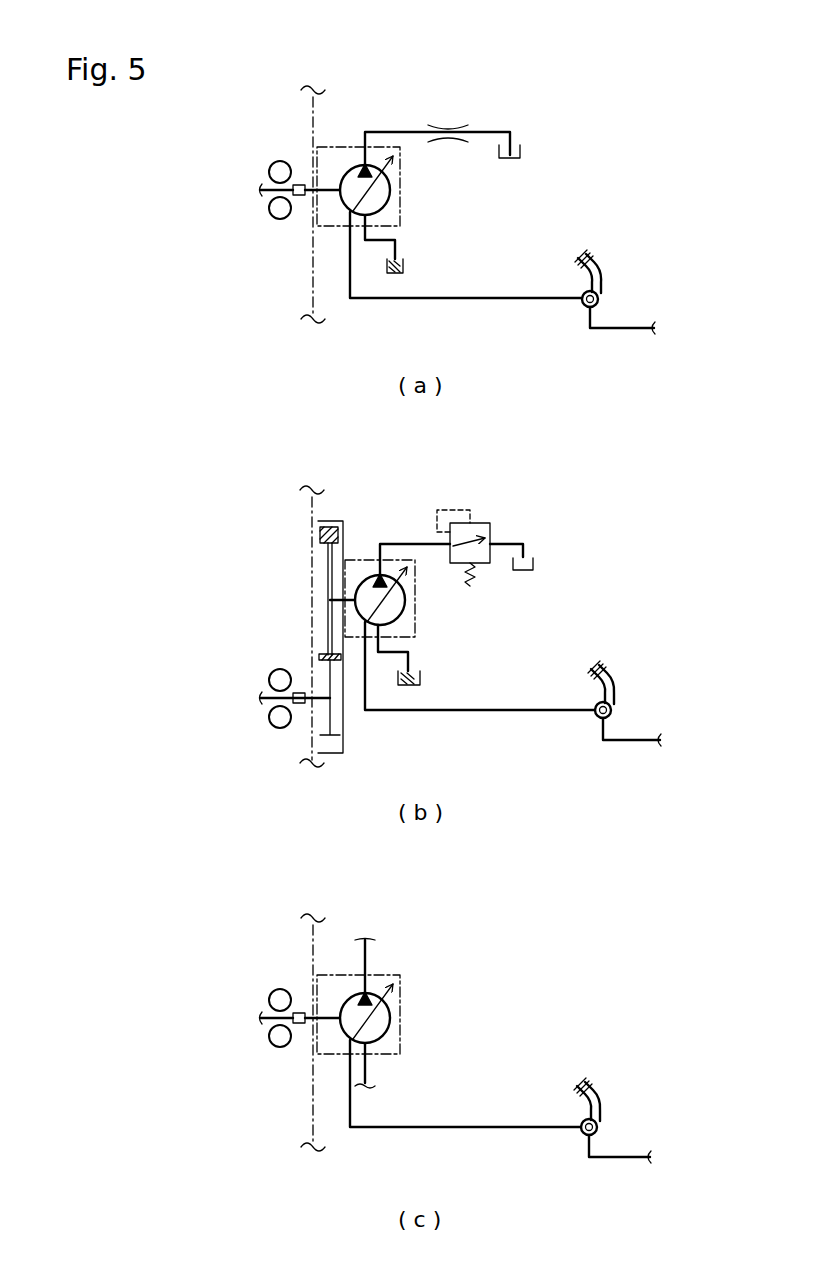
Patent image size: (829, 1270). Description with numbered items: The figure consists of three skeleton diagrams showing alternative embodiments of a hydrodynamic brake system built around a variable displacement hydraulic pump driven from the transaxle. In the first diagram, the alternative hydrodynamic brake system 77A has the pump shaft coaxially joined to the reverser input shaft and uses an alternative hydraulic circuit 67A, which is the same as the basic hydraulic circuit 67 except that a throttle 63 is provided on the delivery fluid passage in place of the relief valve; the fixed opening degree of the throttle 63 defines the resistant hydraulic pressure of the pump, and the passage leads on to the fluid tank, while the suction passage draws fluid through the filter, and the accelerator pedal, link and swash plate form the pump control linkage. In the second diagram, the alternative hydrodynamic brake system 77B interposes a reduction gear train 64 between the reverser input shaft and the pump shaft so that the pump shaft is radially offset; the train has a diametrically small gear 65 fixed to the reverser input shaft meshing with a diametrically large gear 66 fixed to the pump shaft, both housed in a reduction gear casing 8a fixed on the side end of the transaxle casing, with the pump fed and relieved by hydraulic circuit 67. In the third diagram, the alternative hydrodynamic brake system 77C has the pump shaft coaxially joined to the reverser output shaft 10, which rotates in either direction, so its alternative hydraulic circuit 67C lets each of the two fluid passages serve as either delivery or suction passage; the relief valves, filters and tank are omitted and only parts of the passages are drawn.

The reduction gear casing 8a is at (345, 518).
The reverser output shaft 10 is at (270, 1006).
The throttle 63 is at (451, 122).
The reduction gear train 64 is at (318, 528).
The diametrically small gear 65 is at (332, 722).
The diametrically large gear 66 is at (320, 545).
The hydraulic circuit 67 is at (529, 518).
The alternative hydraulic circuit 67A is at (529, 114).
The alternative hydraulic circuit 67C is at (503, 937).
The alternative hydrodynamic brake system 77A is at (641, 179).
The alternative hydrodynamic brake system 77B is at (641, 593).
The alternative hydrodynamic brake system 77C is at (668, 972).